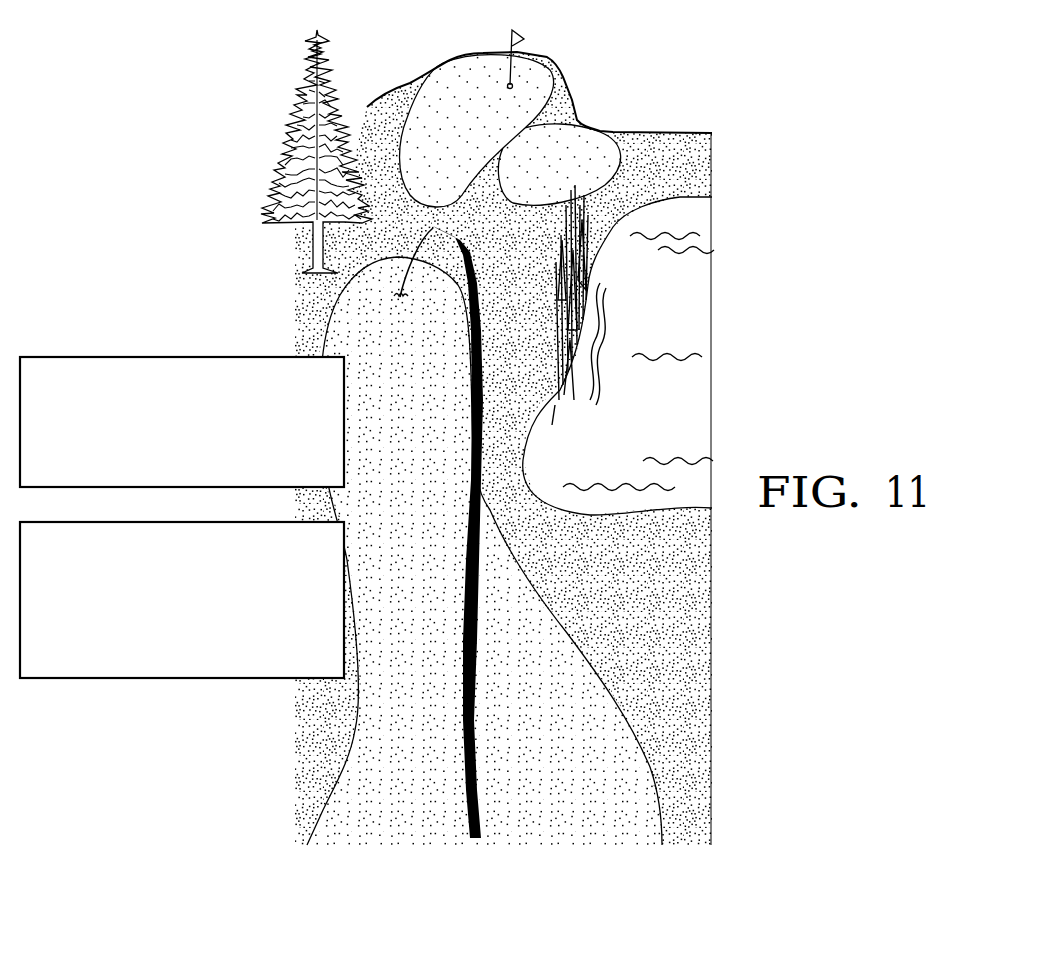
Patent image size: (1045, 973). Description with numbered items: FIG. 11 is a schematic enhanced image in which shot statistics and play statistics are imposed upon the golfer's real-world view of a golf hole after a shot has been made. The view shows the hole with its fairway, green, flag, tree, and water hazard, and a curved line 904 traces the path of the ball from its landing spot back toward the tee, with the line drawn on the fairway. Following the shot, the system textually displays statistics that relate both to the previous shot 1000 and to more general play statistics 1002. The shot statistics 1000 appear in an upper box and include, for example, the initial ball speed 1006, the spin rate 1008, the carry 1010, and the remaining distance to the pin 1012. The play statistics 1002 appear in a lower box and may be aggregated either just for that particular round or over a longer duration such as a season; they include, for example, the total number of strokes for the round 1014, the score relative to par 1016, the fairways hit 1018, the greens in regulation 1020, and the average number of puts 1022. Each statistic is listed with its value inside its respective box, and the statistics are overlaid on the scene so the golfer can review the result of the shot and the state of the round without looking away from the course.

The ball flight path 904 is at (480, 262).
The shot statistics 1000 is at (181, 357).
The play statistics 1002 is at (181, 678).
The initial ball speed 1006 is at (337, 382).
The spin rate 1008 is at (337, 409).
The carry 1010 is at (337, 436).
The remaining distance to the pin 1012 is at (337, 463).
The total number of strokes for the round 1014 is at (337, 545).
The score relative to par 1016 is at (337, 572).
The fairways hit 1018 is at (337, 599).
The greens in regulation 1020 is at (337, 626).
The average number of puts 1022 is at (337, 653).